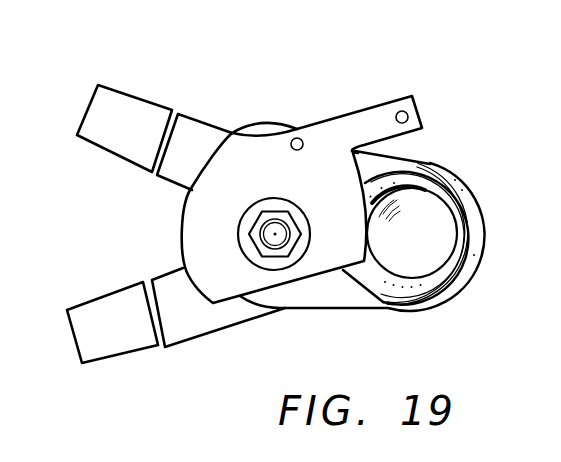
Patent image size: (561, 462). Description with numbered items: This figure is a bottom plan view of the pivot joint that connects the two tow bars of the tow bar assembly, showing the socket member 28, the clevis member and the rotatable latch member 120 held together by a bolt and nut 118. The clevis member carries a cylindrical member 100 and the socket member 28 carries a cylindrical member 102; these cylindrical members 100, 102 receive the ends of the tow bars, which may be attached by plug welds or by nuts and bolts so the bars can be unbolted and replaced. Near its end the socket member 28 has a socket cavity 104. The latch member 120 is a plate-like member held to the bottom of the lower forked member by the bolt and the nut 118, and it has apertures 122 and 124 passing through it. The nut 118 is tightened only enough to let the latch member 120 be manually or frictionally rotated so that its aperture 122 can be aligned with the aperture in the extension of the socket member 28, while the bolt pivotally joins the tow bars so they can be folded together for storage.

The socket member 28 is at (344, 298).
The cylindrical member 100 is at (117, 342).
The cylindrical member 102 is at (125, 108).
The socket cavity 104 is at (449, 199).
The nut 118 is at (253, 221).
The rotatable latch member 120 is at (188, 229).
The aperture 122 is at (297, 138).
The aperture 124 is at (408, 113).